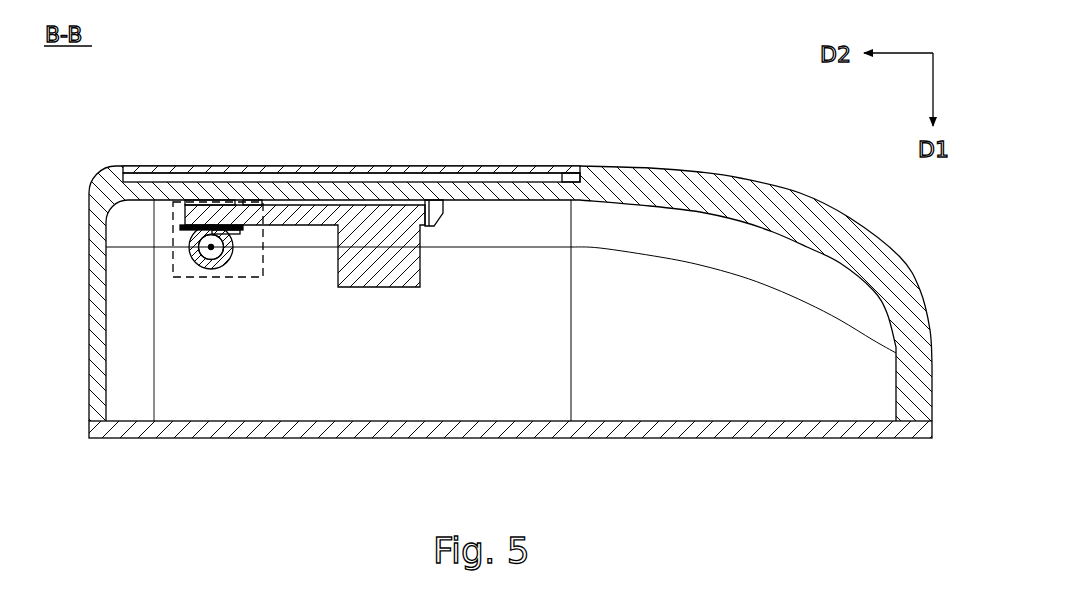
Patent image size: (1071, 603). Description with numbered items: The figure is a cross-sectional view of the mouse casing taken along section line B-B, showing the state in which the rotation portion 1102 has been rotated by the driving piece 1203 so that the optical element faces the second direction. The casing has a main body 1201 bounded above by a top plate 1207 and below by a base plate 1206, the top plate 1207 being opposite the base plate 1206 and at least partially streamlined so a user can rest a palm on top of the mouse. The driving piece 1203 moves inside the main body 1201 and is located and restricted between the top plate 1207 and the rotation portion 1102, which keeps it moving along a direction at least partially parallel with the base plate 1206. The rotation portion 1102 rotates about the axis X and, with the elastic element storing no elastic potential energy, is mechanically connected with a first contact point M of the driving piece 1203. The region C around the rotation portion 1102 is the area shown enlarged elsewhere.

The main body 1201 is at (706, 145).
The top plate 1207 is at (281, 178).
The driving piece 1203 is at (303, 220).
The base plate 1206 is at (487, 434).
The rotation portion 1102 is at (205, 258).
The first contact point M is at (213, 212).
The axis X is at (211, 247).
The region C is at (173, 263).